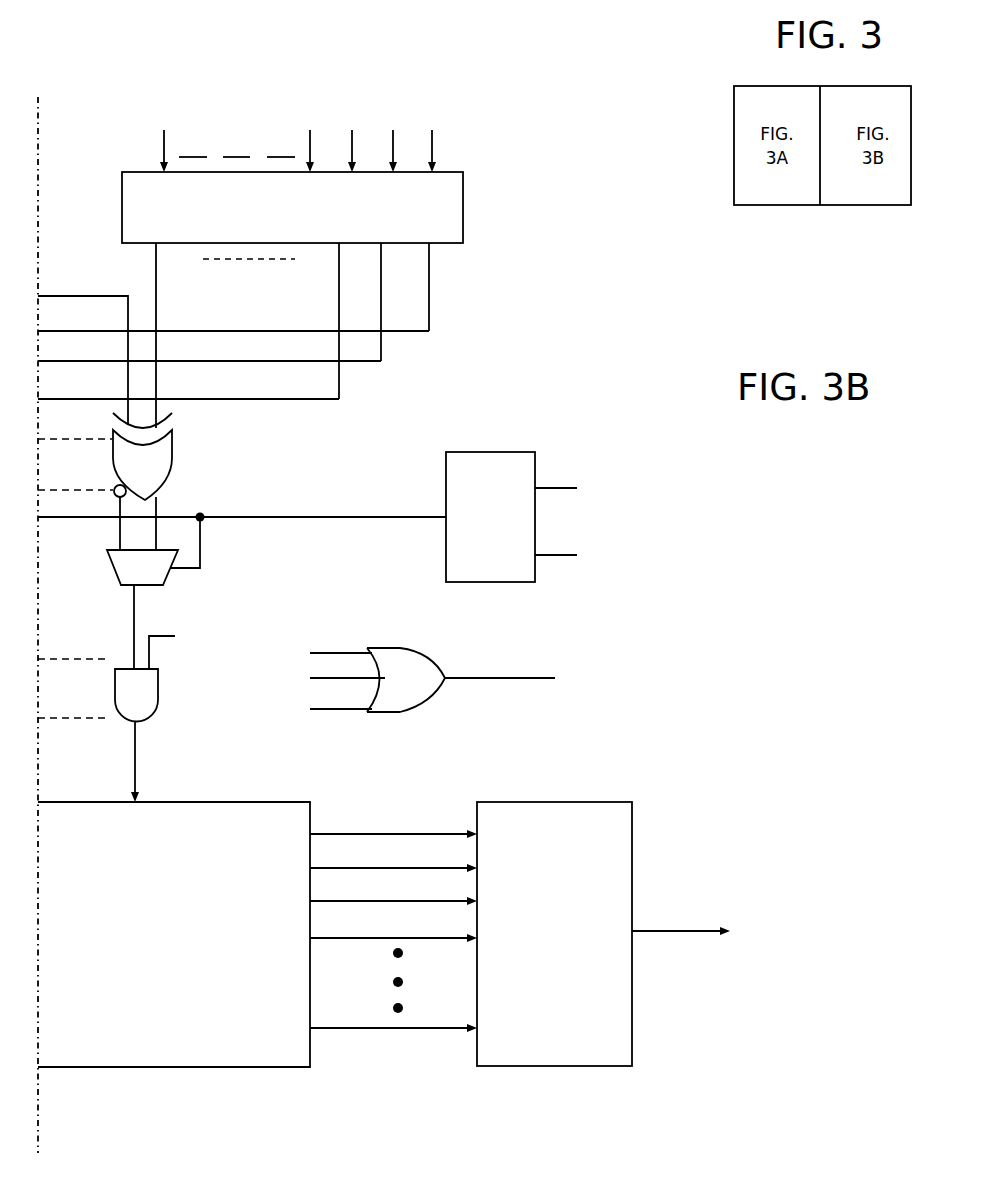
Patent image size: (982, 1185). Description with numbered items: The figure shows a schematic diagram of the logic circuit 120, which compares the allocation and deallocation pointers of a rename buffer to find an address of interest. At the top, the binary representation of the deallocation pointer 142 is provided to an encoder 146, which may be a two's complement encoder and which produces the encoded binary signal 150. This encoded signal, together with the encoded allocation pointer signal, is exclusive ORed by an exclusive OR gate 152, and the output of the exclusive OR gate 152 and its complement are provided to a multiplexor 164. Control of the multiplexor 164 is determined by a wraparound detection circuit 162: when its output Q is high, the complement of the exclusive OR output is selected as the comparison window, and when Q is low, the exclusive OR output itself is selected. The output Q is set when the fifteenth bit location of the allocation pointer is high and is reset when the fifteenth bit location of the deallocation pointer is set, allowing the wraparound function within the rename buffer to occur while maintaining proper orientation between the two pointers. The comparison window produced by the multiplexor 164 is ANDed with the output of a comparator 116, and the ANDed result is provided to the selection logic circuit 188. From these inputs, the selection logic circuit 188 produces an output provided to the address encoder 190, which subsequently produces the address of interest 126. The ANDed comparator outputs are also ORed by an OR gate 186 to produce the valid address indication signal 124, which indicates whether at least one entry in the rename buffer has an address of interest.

The logic circuit 120 is at (596, 287).
The deallocation pointer 142 is at (455, 121).
The encoder 146 is at (463, 217).
The encoded binary signal 150 is at (470, 263).
The exclusive OR gate 152 is at (172, 462).
The wraparound detection circuit 162 is at (503, 452).
The multiplexor 164 is at (170, 570).
The comparator 116 is at (158, 698).
The OR gate 186 is at (433, 697).
The valid address indication signal 124 is at (638, 688).
The selection logic circuit 188 is at (277, 802).
The address encoder 190 is at (497, 1067).
The address of interest 126 is at (787, 950).